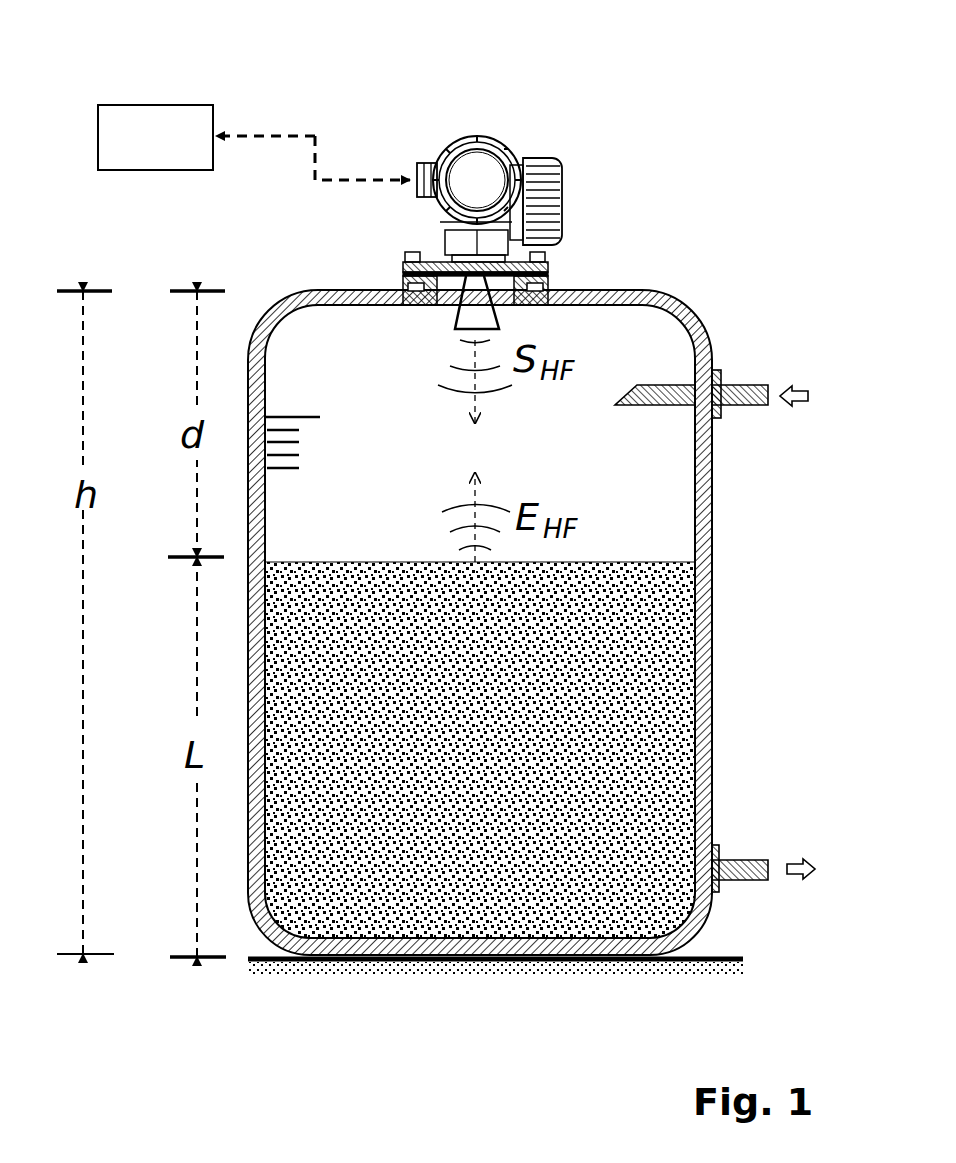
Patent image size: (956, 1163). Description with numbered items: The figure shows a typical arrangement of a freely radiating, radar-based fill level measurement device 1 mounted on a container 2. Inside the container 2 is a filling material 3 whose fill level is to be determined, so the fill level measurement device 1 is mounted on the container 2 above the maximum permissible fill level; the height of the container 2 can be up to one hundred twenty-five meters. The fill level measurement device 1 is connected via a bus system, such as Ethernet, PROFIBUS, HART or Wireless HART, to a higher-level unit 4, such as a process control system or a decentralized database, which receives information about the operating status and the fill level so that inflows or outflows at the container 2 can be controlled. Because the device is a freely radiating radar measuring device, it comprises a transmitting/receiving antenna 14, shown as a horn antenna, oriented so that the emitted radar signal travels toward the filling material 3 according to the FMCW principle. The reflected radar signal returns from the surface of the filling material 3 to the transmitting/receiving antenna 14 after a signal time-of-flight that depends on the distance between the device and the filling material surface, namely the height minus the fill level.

The fill level measurement device 1 is at (372, 104).
The container 2 is at (713, 686).
The filling material 3 is at (496, 778).
The higher-level unit 4 is at (167, 157).
The transmitting/receiving antenna 14 is at (460, 310).